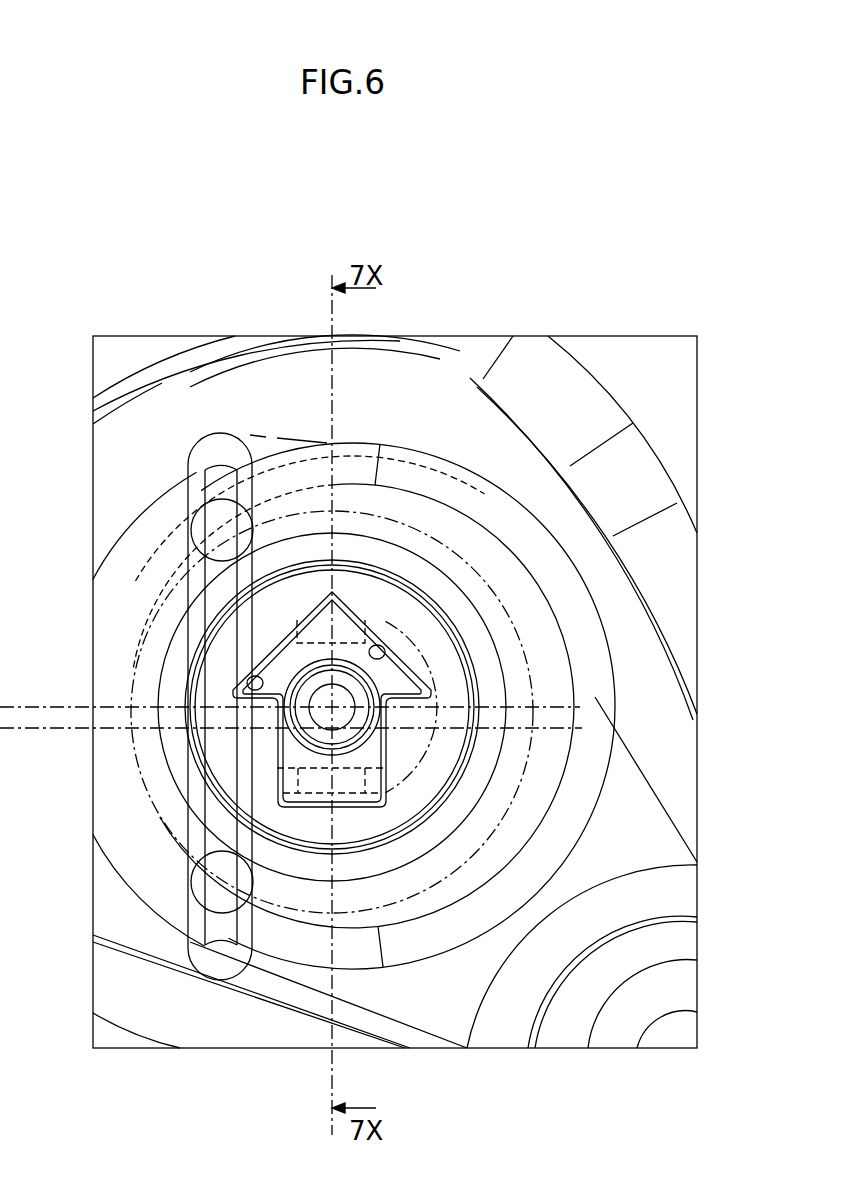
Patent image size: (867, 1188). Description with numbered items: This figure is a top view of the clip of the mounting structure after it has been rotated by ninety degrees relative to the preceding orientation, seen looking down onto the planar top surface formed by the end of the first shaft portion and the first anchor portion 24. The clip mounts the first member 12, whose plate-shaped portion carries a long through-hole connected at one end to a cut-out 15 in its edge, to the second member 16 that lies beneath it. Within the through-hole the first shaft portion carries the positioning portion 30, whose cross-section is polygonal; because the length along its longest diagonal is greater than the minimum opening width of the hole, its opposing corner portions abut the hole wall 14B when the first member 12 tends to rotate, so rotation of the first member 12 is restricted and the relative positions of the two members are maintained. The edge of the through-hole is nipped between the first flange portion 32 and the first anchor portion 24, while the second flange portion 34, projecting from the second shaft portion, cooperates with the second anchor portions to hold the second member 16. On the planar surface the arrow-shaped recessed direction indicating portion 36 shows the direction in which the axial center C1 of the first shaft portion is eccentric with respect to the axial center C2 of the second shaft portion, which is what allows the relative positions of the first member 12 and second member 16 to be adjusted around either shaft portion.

The first member 12 is at (487, 476).
The hole wall 14B is at (402, 645).
The cut-out 15 is at (180, 680).
The second member 16 is at (648, 843).
The first anchor portion 24 is at (186, 744).
The positioning portion 30 is at (400, 718).
The first flange portion 32 is at (300, 880).
The second flange portion 34 is at (295, 882).
The direction indicating portion 36 is at (233, 690).
The axial center of the first shaft portion C1 is at (332, 707).
The axial center of the second shaft portion C2 is at (332, 707).